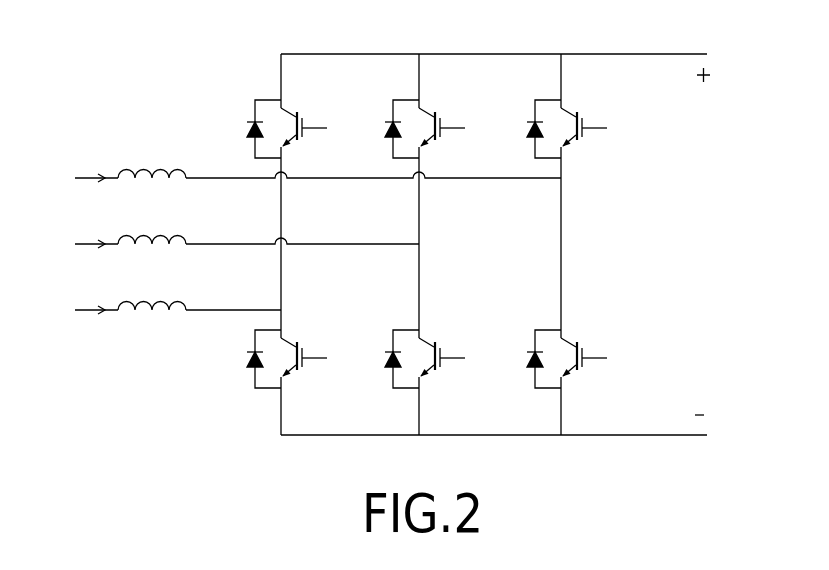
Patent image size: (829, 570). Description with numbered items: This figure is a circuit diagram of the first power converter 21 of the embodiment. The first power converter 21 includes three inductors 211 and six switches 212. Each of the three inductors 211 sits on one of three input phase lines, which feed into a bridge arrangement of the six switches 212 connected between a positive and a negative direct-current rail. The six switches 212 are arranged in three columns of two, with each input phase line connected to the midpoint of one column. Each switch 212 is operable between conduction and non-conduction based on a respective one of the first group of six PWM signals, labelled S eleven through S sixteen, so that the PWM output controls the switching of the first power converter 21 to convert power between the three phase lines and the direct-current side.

The first power converter 21 is at (150, 87).
The inductor 211 is at (146, 169).
The switch 212 is at (449, 227).